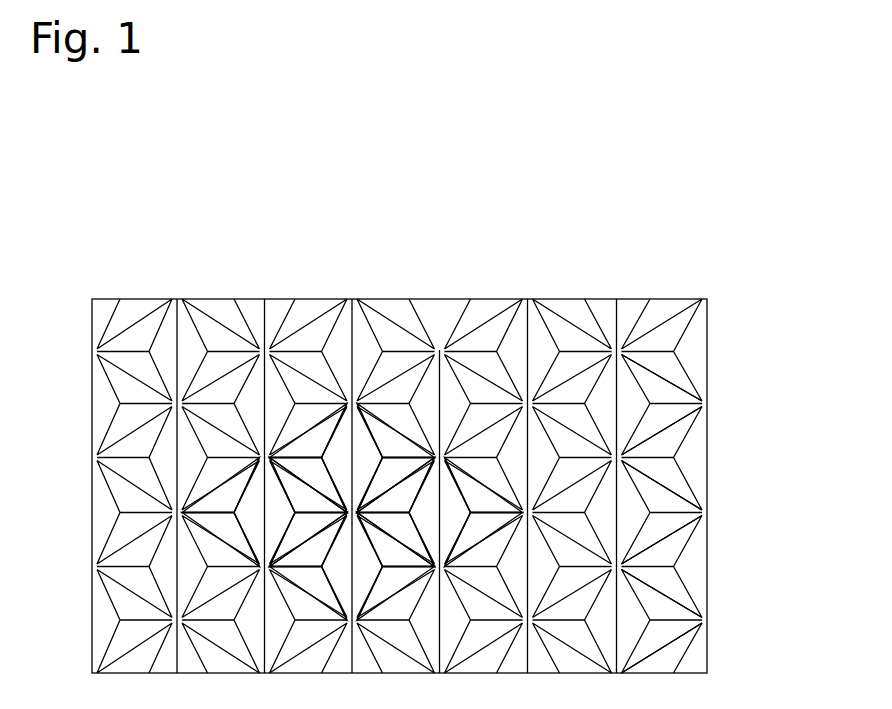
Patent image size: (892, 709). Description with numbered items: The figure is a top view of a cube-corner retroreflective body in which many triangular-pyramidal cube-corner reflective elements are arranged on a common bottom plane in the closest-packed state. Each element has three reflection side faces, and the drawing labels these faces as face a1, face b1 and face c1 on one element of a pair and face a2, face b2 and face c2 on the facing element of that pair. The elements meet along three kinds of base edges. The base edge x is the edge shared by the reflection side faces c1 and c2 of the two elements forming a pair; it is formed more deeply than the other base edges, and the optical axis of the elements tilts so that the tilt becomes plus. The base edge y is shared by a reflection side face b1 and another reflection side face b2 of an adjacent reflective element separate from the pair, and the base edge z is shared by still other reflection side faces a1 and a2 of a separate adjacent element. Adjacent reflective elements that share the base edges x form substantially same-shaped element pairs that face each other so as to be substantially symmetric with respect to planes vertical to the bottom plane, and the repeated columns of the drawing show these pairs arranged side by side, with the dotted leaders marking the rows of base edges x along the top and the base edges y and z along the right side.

The base edge x is at (616, 291).
The base edge y is at (760, 586).
The base edge z is at (758, 648).
The reflection side face a1 is at (396, 485).
The reflection side face a2 is at (308, 539).
The reflection side face b1 is at (396, 539).
The reflection side face b2 is at (308, 485).
The reflection side face c1 is at (370, 512).
The reflection side face c2 is at (335, 512).